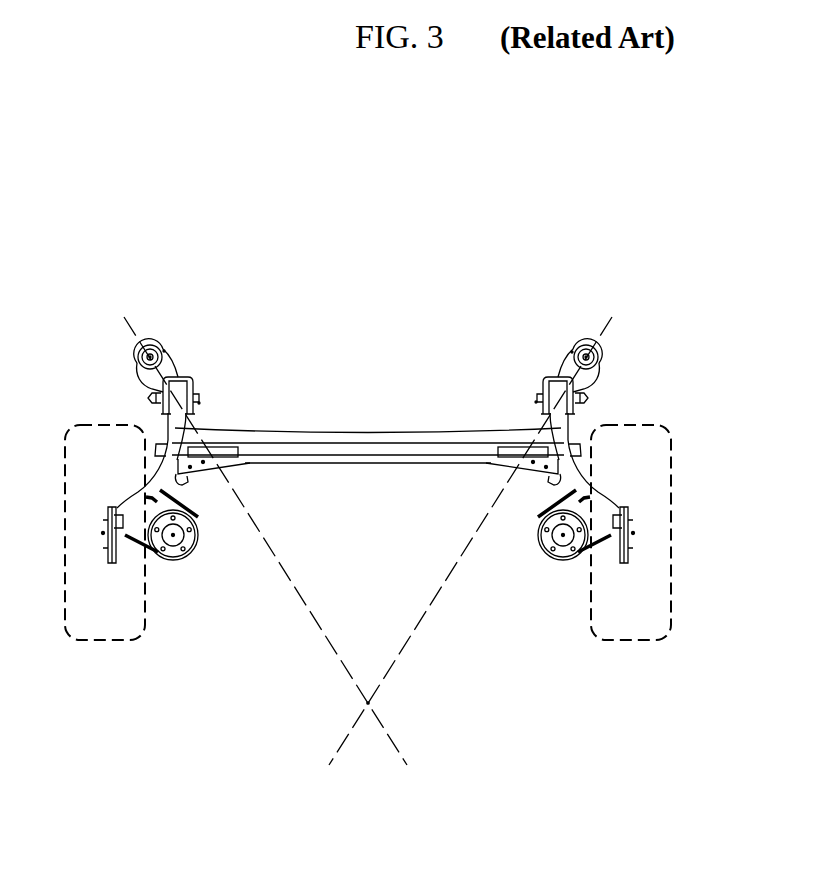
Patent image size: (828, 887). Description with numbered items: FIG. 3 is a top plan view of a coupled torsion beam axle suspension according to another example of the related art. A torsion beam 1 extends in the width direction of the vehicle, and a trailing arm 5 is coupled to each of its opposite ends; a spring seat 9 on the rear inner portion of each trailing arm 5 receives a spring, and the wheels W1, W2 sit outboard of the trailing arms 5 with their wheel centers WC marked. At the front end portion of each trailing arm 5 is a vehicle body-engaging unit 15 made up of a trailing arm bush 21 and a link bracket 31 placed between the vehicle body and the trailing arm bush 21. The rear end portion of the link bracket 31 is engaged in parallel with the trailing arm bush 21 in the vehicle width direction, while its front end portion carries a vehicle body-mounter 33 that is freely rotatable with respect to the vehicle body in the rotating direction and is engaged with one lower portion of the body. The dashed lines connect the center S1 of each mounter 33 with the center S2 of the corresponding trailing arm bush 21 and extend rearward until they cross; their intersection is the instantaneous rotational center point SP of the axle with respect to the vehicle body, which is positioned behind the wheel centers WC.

The torsion beam 1 is at (367, 465).
The vehicle body-engaging unit 15 is at (123, 337).
The vehicle body-mounter 33 is at (160, 344).
The center of the mounter S1 is at (164, 351).
The link bracket 31 is at (134, 378).
The trailing arm bush 21 is at (195, 388).
The center of the trailing arm bush S2 is at (199, 403).
The trailing arm 5 is at (183, 485).
The spring seat 9 is at (199, 547).
The wheel center WC is at (99, 539).
The wheel W1 is at (113, 643).
The wheel W2 is at (643, 643).
The instantaneous rotational center point SP is at (371, 704).